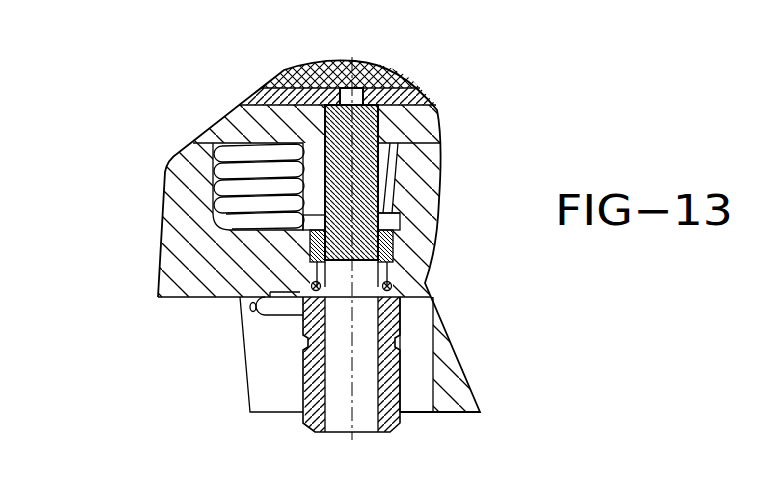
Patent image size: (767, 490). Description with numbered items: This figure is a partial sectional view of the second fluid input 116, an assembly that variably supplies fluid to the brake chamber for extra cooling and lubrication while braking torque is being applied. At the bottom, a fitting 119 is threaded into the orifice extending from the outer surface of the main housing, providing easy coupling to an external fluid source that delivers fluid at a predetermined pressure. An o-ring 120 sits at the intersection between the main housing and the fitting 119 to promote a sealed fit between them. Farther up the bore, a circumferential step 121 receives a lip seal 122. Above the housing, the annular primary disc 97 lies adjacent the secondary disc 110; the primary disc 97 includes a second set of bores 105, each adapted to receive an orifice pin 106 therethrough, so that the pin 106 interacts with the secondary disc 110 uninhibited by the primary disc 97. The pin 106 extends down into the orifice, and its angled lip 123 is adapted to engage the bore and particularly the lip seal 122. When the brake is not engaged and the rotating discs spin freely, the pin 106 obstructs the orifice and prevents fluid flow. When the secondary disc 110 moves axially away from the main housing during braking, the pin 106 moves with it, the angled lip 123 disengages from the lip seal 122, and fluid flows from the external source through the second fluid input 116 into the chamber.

The primary disc 97 is at (237, 131).
The second set of bores 105 is at (326, 122).
The secondary disc 110 is at (413, 100).
The orifice pin 106 is at (360, 172).
The lip seal 122 is at (382, 243).
The angled lip 123 is at (380, 251).
The circumferential step 121 is at (314, 250).
The o-ring 120 is at (312, 289).
The fitting 119 is at (313, 364).
The second fluid input 116 is at (418, 432).